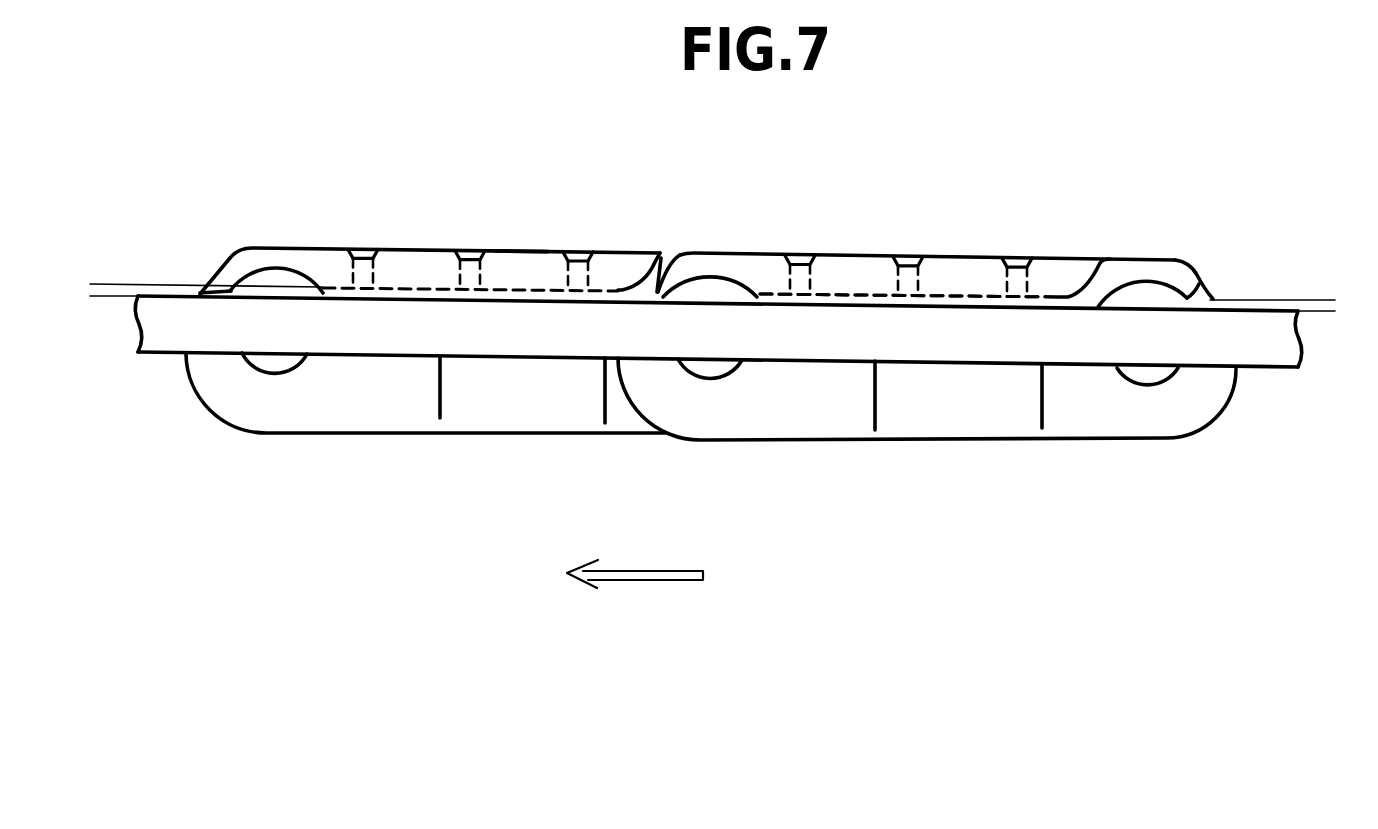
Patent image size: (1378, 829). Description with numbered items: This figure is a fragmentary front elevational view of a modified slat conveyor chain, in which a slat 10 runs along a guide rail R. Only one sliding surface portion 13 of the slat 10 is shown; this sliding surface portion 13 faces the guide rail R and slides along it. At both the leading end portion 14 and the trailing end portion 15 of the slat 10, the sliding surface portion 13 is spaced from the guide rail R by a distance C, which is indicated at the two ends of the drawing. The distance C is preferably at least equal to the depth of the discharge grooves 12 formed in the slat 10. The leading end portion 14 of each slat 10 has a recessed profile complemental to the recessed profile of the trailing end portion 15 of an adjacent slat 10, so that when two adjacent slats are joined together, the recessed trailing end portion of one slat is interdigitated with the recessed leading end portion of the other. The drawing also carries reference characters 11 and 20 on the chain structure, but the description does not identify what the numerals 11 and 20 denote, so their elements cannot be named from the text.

The slat 10 is at (731, 243).
The recess 11 is at (364, 264).
The discharge grooves 12 is at (527, 290).
The sliding surface portion 13 is at (933, 311).
The leading end portion 14 is at (229, 289).
The trailing end portion 15 is at (1194, 296).
The carriage base 20 is at (557, 408).
The guide rail R is at (365, 345).
The distance C is at (102, 250).